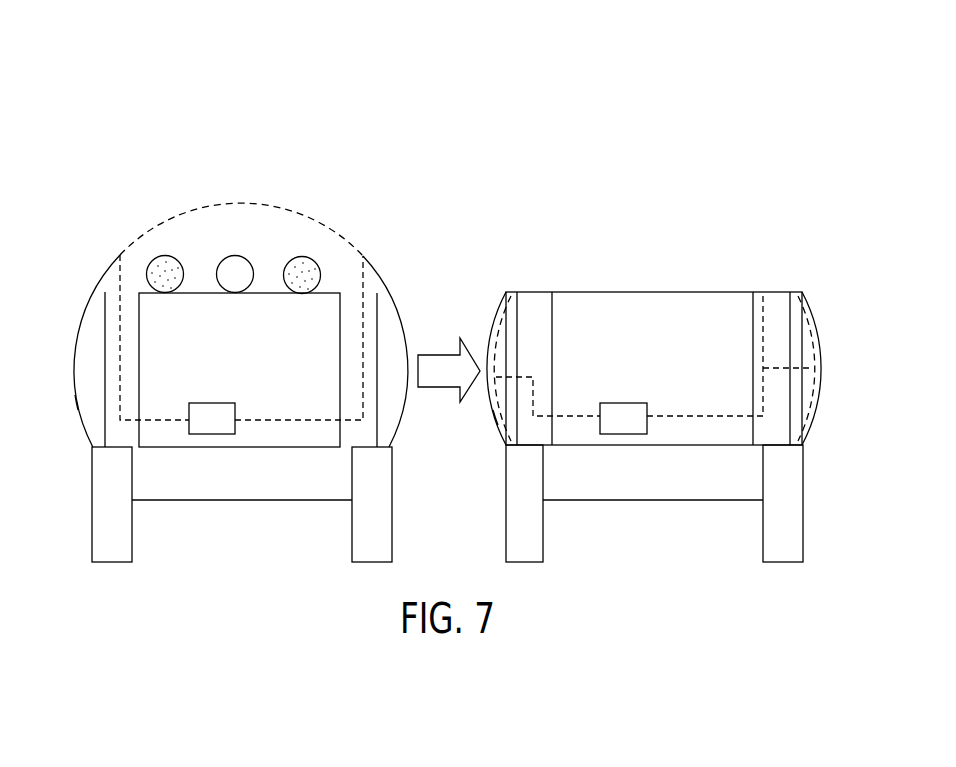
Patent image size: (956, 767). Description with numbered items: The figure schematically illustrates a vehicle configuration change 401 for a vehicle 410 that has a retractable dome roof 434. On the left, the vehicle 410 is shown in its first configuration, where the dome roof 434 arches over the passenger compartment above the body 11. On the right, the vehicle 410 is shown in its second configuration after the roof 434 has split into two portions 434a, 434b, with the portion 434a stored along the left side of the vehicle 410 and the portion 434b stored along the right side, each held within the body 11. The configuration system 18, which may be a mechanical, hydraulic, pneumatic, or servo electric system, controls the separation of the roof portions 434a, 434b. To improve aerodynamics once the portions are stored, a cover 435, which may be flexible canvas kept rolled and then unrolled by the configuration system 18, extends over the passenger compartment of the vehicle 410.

The vehicle configuration change 401 is at (103, 77).
The vehicle 410 is at (56, 205).
The retractable dome roof 434 is at (280, 205).
The cover 435 is at (604, 291).
The roof portion 434a is at (496, 338).
The roof portion 434b is at (812, 340).
The body 11 is at (77, 402).
The configuration system 18 is at (221, 430).